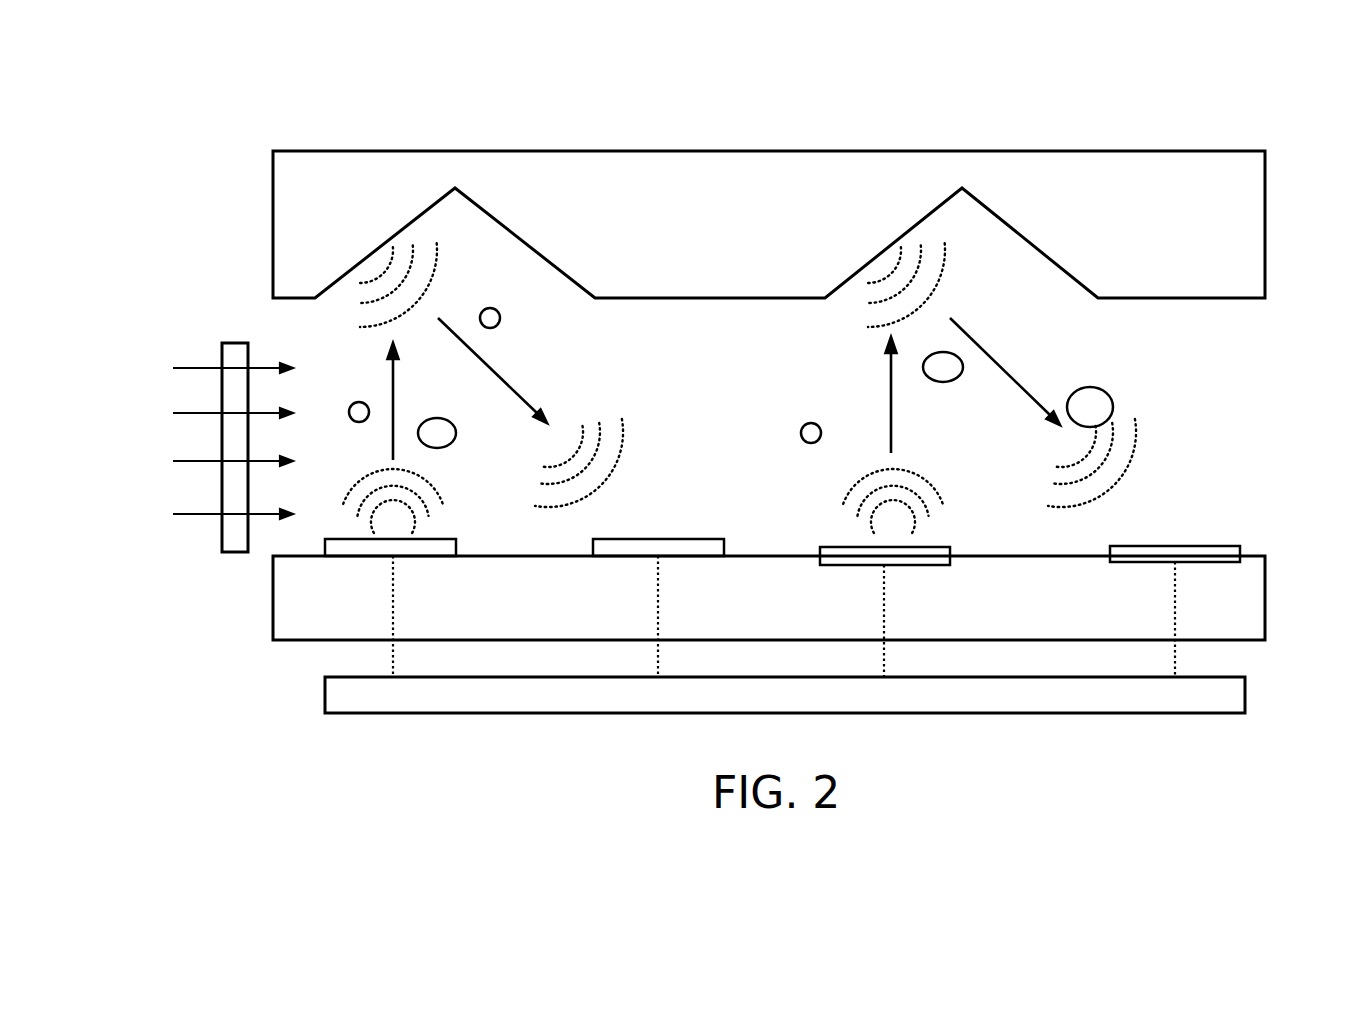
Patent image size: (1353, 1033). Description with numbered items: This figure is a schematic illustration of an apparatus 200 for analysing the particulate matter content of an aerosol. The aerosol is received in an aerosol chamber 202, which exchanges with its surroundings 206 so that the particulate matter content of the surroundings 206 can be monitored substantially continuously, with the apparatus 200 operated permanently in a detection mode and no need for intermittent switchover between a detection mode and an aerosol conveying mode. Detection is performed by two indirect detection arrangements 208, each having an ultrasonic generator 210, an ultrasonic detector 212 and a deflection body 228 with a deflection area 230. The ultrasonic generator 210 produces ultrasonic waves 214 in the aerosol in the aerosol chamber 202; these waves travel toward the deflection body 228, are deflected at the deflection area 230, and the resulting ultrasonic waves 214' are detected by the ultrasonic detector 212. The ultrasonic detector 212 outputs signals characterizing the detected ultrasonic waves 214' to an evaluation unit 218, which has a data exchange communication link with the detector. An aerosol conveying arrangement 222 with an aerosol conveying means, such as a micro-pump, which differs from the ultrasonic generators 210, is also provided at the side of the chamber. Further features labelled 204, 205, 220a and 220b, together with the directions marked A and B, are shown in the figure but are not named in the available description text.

The apparatus 200 is at (1184, 124).
The aerosol chamber 202 is at (1252, 398).
The bottom substrate 204 is at (1255, 612).
The top substrate with prism structures 205 is at (1229, 165).
The surroundings 206 is at (1325, 449).
The indirect detection arrangement 208 is at (432, 208).
The ultrasonic generator 210 is at (360, 558).
The ultrasonic detector 212 is at (705, 560).
The ultrasonic waves 214 is at (620, 484).
The ultrasonic waves 214' is at (708, 380).
The evaluation unit 218 is at (1246, 697).
The first pixel region 220a is at (395, 665).
The second pixel region 220b is at (660, 665).
The aerosol conveying arrangement 222 is at (236, 342).
The deflection body 228 is at (416, 178).
The deflection area 230 is at (447, 238).
The light ray A is at (390, 378).
The light ray B is at (503, 379).